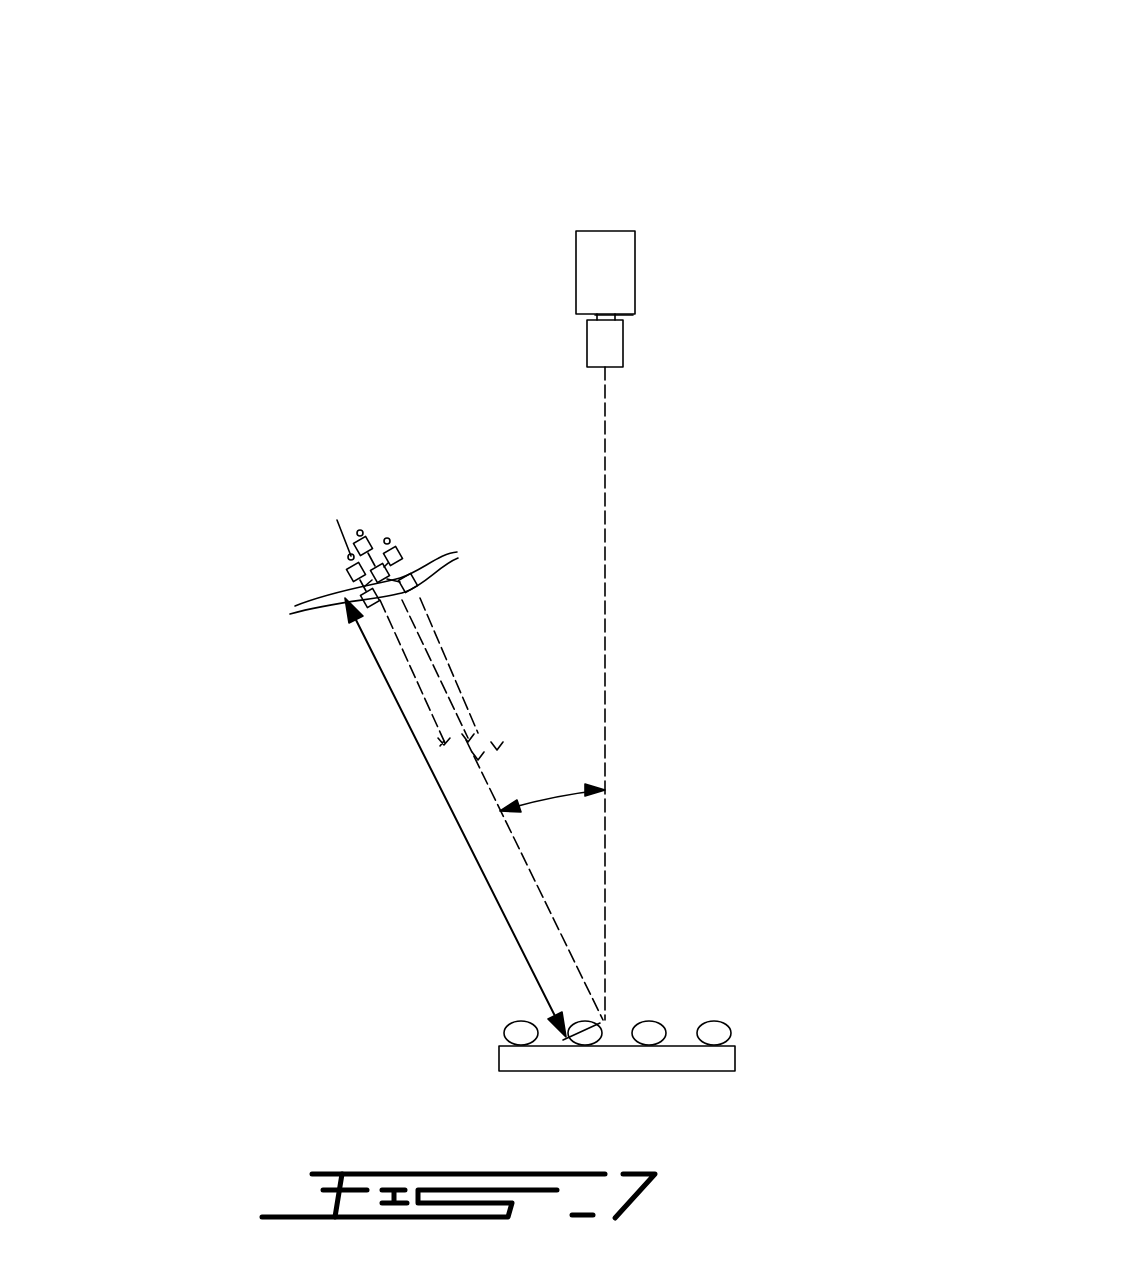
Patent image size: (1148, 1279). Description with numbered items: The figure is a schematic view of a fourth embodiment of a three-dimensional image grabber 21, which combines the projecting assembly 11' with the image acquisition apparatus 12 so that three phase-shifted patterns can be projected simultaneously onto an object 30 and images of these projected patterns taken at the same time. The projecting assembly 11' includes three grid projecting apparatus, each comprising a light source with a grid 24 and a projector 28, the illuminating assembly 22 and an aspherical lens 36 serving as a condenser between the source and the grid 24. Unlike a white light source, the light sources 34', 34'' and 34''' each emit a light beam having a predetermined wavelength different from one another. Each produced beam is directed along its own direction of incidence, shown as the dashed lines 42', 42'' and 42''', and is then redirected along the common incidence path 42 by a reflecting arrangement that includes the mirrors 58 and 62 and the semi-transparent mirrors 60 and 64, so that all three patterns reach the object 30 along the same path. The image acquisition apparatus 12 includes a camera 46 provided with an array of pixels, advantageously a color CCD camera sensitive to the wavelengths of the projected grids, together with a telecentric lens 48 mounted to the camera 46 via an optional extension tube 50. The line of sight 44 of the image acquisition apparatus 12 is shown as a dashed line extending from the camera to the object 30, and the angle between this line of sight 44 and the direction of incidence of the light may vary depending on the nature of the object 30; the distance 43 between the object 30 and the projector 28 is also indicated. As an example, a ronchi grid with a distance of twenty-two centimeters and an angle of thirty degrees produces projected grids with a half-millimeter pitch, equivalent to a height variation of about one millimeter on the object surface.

The projecting assembly 11' is at (157, 791).
The image acquisition apparatus 12 is at (705, 235).
The 3D grabber 21 is at (283, 297).
The illuminating assembly 22 is at (335, 565).
The grid 24 is at (412, 560).
The projector 28 is at (418, 572).
The object 30 is at (725, 1058).
The light source 34' is at (396, 465).
The light source 34'' is at (322, 451).
The light source 34''' is at (262, 494).
The aspherical lens 36 is at (347, 595).
The incidence path 42 is at (477, 809).
The direction of incidence 42' is at (333, 696).
The direction of incidence 42'' is at (516, 643).
The direction of incidence 42''' is at (336, 769).
The distance 43 is at (470, 847).
The line of sight 44 is at (605, 718).
The camera 46 is at (596, 250).
The telecentric lens 48 is at (610, 352).
The extension tube 50 is at (633, 315).
The mirror 58 is at (442, 747).
The semi-transparent mirror 60 is at (466, 742).
The mirror 62 is at (492, 758).
The semi-transparent mirror 64 is at (495, 755).